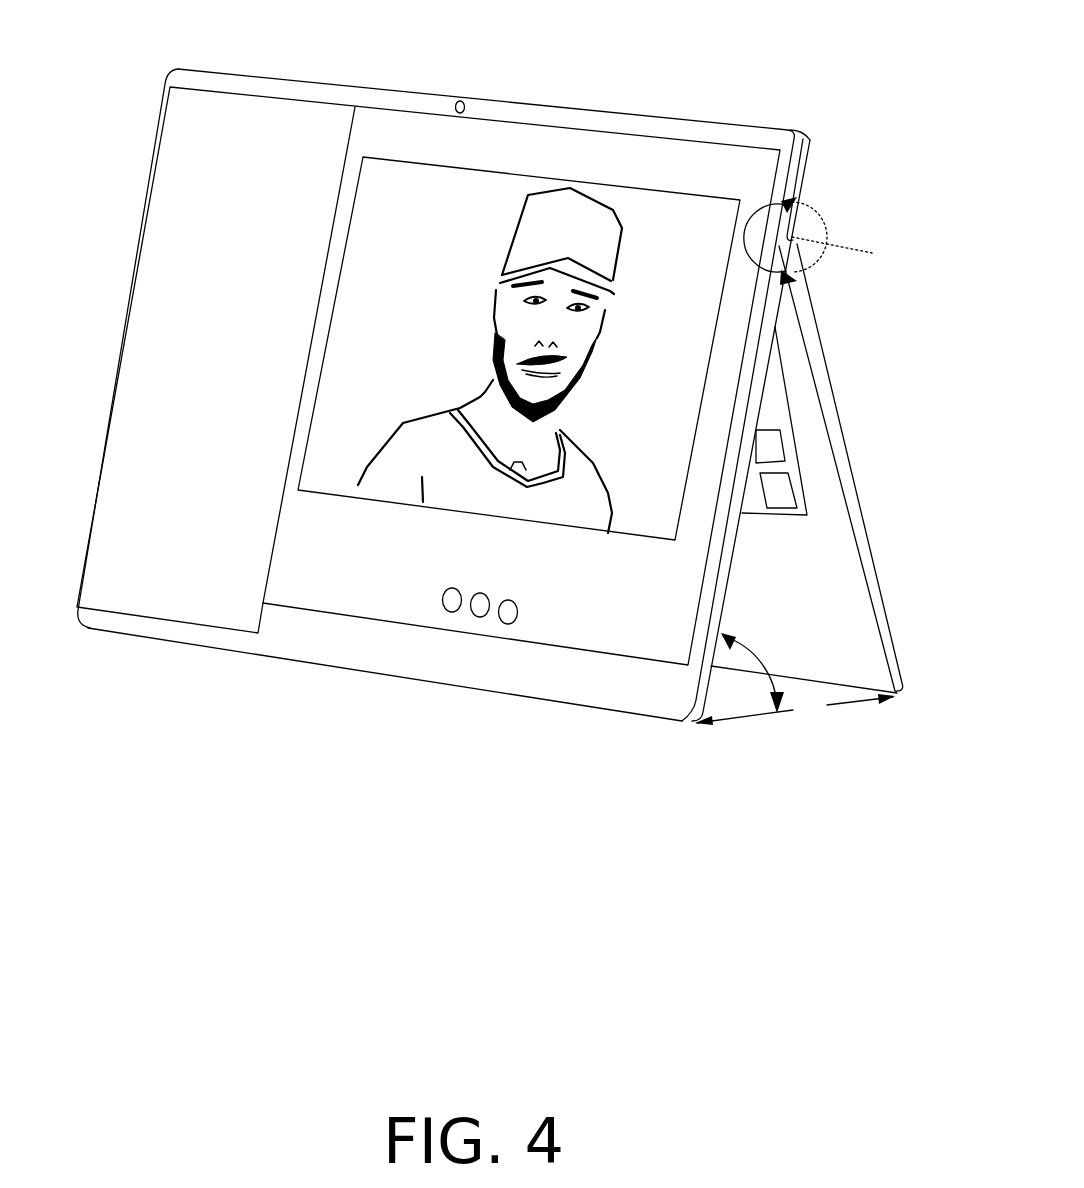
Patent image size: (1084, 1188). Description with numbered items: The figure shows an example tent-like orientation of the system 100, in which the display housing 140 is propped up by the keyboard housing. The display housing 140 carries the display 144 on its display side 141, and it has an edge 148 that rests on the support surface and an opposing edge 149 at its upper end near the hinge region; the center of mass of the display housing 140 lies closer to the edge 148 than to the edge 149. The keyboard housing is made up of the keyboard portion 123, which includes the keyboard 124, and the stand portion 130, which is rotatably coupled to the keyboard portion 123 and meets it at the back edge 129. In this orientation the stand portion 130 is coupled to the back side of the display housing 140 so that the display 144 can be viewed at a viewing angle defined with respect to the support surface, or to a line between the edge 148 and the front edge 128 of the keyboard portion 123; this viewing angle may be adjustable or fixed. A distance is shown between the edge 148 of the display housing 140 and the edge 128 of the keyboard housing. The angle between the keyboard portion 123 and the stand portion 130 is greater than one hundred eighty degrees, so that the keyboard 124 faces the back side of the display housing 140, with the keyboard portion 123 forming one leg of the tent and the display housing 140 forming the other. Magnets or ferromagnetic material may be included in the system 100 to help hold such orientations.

The system 100 is at (818, 38).
The keyboard portion 123 is at (857, 485).
The keyboard 124 is at (757, 516).
The front edge 128 is at (834, 678).
The back edge 129 is at (806, 132).
The stand portion 130 is at (813, 153).
The display housing 140 is at (593, 110).
The display side 141 is at (466, 669).
The display 144 is at (360, 552).
The edge 148 is at (648, 717).
The opposing edge 149 is at (503, 102).